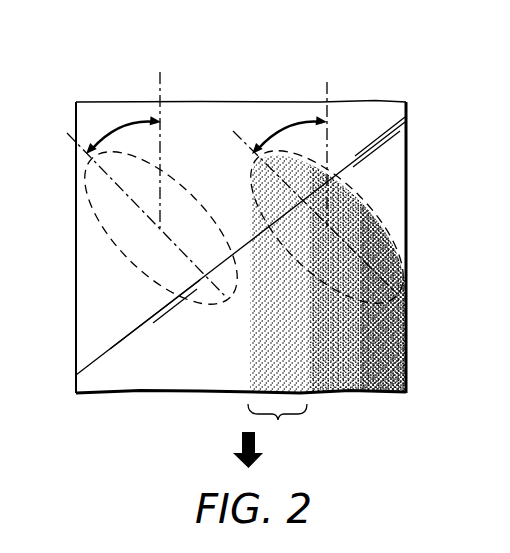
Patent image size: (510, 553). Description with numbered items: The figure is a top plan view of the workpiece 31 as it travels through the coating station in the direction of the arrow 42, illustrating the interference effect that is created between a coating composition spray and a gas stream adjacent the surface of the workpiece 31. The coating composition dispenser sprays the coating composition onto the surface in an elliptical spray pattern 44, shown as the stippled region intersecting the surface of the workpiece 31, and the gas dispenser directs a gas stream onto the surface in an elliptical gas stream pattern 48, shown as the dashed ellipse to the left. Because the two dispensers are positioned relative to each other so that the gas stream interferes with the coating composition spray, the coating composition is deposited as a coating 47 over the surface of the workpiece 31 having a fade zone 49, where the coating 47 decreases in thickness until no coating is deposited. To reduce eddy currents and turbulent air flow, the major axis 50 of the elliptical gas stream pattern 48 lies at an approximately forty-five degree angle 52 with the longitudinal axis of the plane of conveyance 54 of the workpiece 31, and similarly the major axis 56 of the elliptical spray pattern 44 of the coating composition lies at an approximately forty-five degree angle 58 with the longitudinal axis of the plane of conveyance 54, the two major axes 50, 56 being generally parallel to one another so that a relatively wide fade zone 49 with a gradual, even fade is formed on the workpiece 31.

The workpiece 31 is at (407, 128).
The arrow 42 is at (258, 447).
The elliptical spray pattern 44 is at (355, 196).
The coating 47 is at (407, 346).
The elliptical gas stream pattern 48 is at (103, 228).
The fade zone 49 is at (278, 420).
The major axis 50 is at (116, 184).
The angle 52 is at (125, 129).
The longitudinal axis of the plane of conveyance 54 is at (160, 82).
The major axis 56 is at (252, 153).
The angle 58 is at (288, 128).